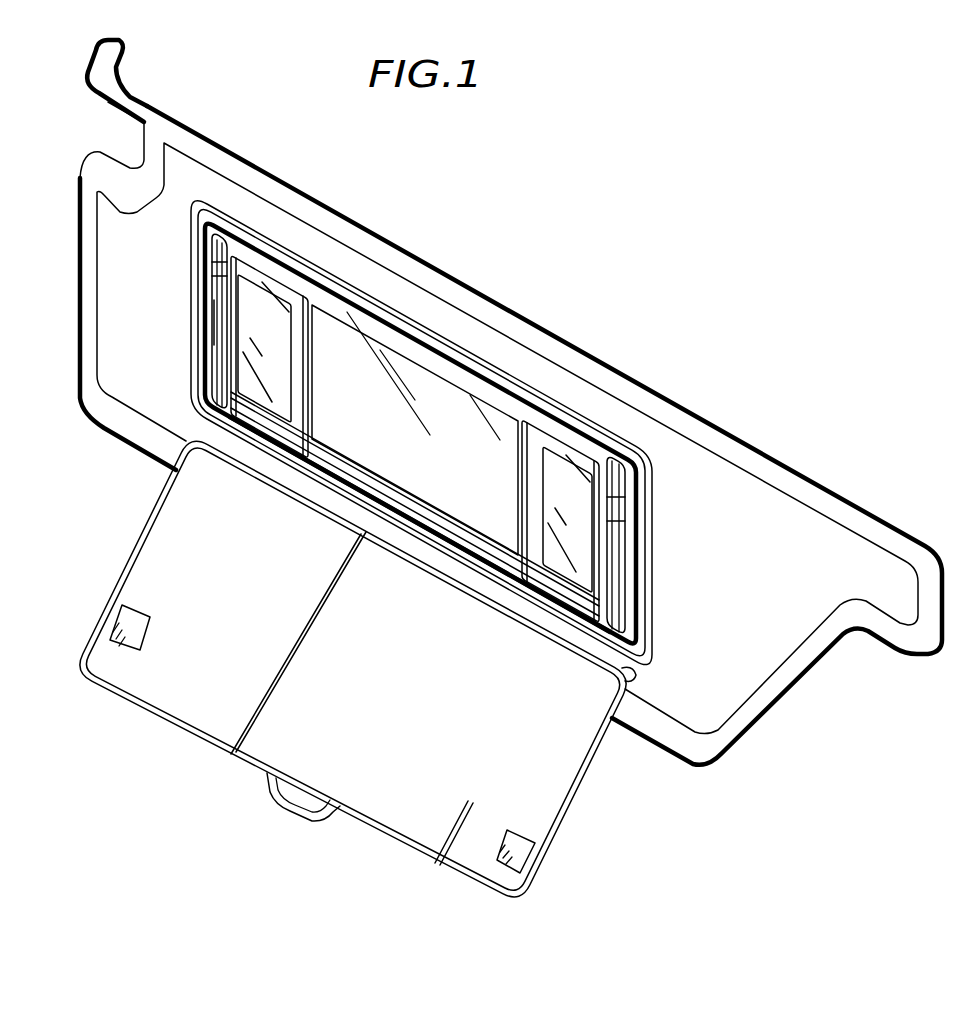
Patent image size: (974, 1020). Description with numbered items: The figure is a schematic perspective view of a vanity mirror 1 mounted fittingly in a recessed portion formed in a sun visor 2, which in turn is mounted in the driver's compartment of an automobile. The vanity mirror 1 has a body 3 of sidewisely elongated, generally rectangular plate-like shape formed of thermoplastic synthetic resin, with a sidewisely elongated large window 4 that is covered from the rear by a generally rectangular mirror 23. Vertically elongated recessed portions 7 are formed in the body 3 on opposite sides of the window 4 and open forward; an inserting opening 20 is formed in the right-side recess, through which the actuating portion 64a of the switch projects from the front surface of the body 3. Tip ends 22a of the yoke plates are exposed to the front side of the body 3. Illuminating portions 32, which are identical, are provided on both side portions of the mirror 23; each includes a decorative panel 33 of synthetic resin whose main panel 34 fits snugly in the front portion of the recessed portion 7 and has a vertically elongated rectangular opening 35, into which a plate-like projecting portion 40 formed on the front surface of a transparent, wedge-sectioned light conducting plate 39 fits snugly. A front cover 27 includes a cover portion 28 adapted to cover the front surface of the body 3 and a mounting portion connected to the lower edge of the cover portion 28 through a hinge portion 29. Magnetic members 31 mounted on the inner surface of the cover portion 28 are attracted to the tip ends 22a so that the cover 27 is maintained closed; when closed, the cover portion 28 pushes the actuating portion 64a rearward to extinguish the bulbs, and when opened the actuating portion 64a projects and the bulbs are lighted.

The vanity mirror 1 is at (590, 373).
The sun visor 2 is at (722, 443).
The body 3 is at (452, 335).
The window 4 is at (357, 465).
The recessed portions 7 is at (280, 275).
The inserting opening 20 is at (207, 318).
The tip ends of the yoke plates 22a is at (210, 273).
The mirror 23 is at (418, 528).
The front cover 27 is at (595, 770).
The cover portion 28 is at (547, 808).
The hinge portion 29 is at (636, 674).
The magnetic members 31 is at (128, 618).
The illuminating portions 32 is at (252, 290).
The decorative panel 33 is at (267, 418).
The main panel 34 is at (288, 422).
The opening 35 is at (243, 415).
The light conducting plate 39 is at (292, 328).
The projecting portion 40 is at (272, 367).
The actuating portion 64a is at (207, 324).